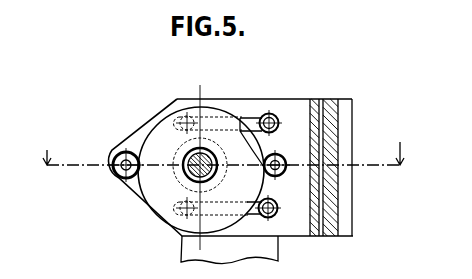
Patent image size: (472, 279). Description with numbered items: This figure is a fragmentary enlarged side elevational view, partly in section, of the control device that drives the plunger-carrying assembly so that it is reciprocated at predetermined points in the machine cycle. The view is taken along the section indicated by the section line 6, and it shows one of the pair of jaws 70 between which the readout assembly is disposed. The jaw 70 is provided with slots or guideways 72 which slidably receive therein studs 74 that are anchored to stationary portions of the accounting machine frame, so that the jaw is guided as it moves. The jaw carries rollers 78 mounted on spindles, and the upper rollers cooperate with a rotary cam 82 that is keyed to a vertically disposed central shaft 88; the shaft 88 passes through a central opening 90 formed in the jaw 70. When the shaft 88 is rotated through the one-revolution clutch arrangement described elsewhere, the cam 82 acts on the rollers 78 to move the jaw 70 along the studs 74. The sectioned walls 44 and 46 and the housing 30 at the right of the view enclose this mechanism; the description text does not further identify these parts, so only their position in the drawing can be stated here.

The section line 6- 6 is at (228, 157).
The housing 30 is at (346, 100).
The first wall 44 is at (312, 100).
The second wall 46 is at (336, 78).
The jaw 70 is at (350, 225).
The slot or guideway 72 is at (252, 117).
The stud 74 is at (277, 130).
The roller 78 is at (118, 180).
The rotary cam 82 is at (152, 129).
The central shaft 88 is at (186, 175).
The central opening 90 is at (226, 178).